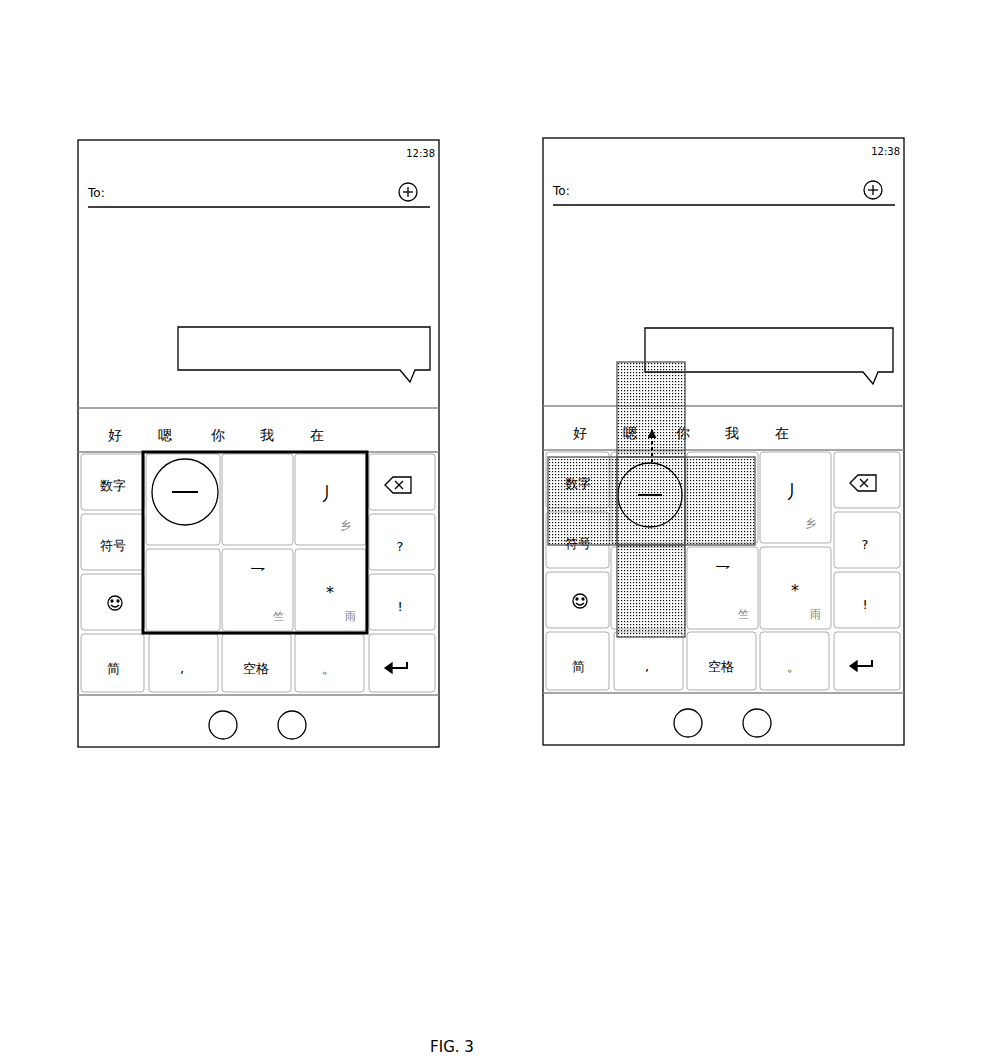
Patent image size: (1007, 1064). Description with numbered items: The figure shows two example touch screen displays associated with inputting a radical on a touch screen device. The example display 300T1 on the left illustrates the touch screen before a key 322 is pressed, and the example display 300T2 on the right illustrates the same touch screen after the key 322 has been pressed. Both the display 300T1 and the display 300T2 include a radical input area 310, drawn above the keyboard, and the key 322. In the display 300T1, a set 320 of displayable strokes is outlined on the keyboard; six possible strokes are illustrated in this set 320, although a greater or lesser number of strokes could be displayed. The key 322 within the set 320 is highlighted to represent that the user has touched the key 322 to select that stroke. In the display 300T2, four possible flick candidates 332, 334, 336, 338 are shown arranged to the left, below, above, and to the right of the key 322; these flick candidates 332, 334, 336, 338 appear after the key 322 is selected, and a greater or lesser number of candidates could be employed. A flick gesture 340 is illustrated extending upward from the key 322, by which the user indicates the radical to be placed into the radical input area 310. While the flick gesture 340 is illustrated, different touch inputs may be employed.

The example display 300T1 is at (277, 135).
The example display 300T2 is at (737, 133).
The radical input area 310 is at (318, 320).
The set of displayable strokes 320 is at (141, 527).
The key 322 is at (158, 482).
The flick candidate 332 is at (562, 513).
The flick candidate 334 is at (633, 582).
The flick candidate 336 is at (622, 378).
The flick candidate 338 is at (745, 520).
The flick gesture 340 is at (645, 440).